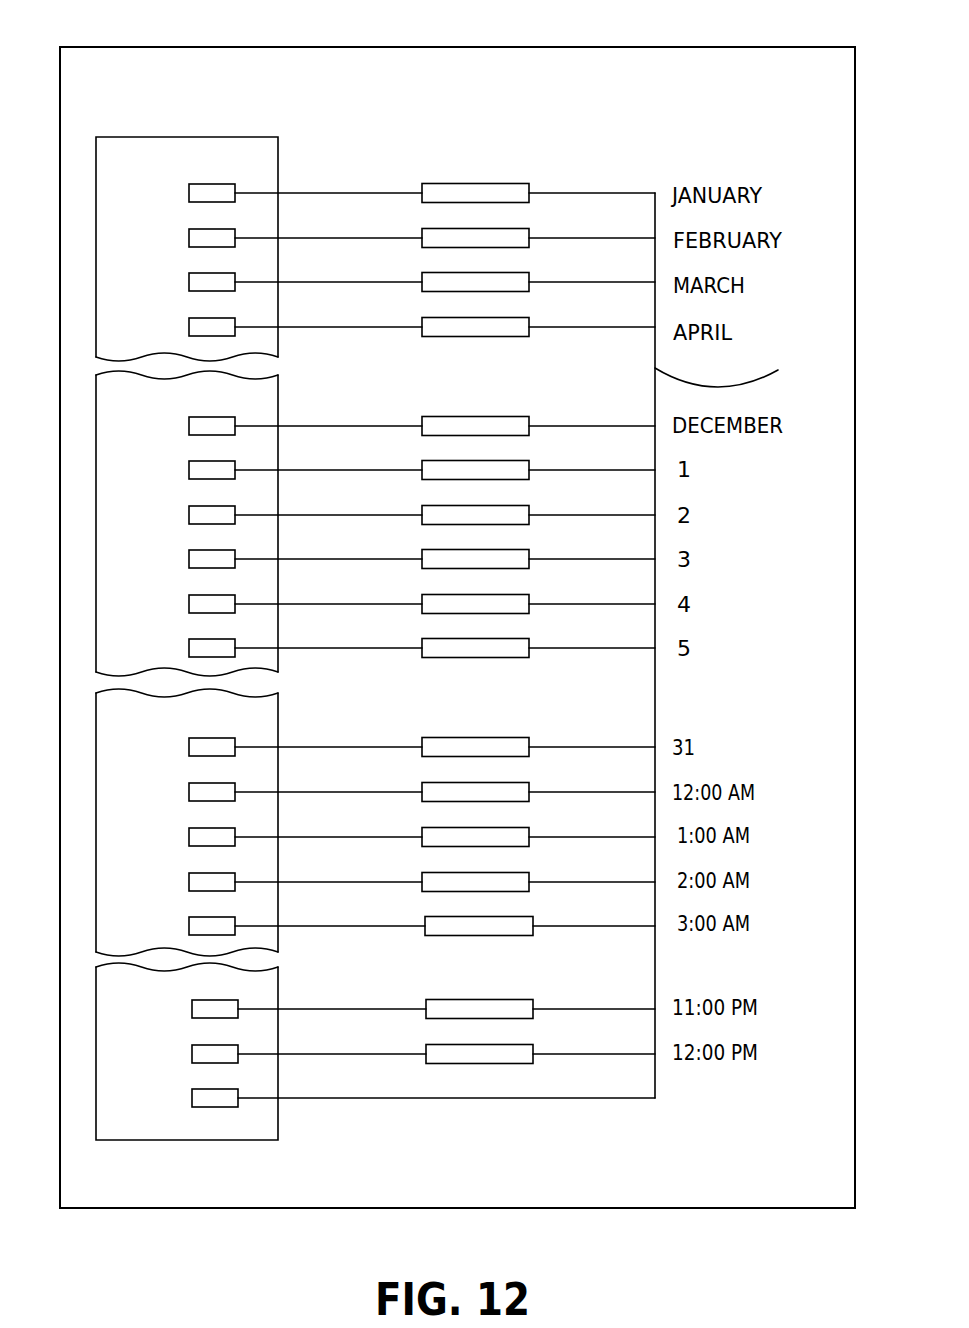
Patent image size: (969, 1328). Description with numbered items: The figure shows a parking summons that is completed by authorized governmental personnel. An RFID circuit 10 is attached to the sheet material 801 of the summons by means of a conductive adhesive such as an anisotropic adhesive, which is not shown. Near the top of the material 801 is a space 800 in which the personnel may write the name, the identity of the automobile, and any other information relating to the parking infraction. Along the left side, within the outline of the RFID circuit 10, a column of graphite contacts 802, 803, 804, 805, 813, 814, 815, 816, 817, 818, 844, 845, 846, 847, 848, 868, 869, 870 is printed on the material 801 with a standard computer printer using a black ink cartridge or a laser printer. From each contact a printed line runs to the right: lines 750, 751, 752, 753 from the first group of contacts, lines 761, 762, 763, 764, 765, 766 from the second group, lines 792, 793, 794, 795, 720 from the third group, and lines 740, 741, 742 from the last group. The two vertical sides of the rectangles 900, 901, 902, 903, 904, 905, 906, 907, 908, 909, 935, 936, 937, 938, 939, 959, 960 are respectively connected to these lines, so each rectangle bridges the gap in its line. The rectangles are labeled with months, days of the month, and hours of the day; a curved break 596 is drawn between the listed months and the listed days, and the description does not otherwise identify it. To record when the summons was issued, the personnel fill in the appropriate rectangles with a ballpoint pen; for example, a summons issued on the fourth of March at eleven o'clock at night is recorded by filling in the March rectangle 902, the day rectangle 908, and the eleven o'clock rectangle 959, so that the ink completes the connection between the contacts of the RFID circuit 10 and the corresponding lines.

The RFID circuit 10 is at (217, 148).
The material 801 is at (625, 65).
The space 800 is at (556, 82).
The break indicating omitted entries 596 is at (738, 364).
The graphite contact 802 is at (189, 184).
The graphite contact 803 is at (189, 229).
The graphite contact 804 is at (189, 273).
The graphite contact 805 is at (189, 318).
The graphite contact 813 is at (189, 417).
The graphite contact 814 is at (189, 461).
The graphite contact 815 is at (189, 506).
The graphite contact 816 is at (189, 550).
The graphite contact 817 is at (189, 595).
The graphite contact 818 is at (189, 639).
The graphite contact 844 is at (189, 738).
The graphite contact 845 is at (189, 783).
The graphite contact 846 is at (189, 828).
The graphite contact 847 is at (189, 873).
The graphite contact 848 is at (189, 917).
The graphite contact 868 is at (192, 1000).
The graphite contact 869 is at (192, 1045).
The graphite contact 870 is at (192, 1089).
The line 750 is at (370, 193).
The line 751 is at (370, 238).
The line 752 is at (370, 282).
The line 753 is at (370, 327).
The line 761 is at (377, 426).
The line 762 is at (377, 470).
The line 763 is at (377, 515).
The line 764 is at (377, 559).
The line 765 is at (377, 604).
The line 766 is at (377, 648).
The line 792 is at (377, 747).
The line 793 is at (377, 792).
The line 794 is at (377, 837).
The line 795 is at (377, 882).
The line 720 is at (387, 926).
The line 740 is at (378, 1009).
The line 741 is at (378, 1054).
The line 742 is at (378, 1098).
The rectangle 900 is at (529, 184).
The rectangle 901 is at (529, 229).
The rectangle 902 is at (529, 273).
The rectangle 903 is at (529, 318).
The rectangle 904 is at (529, 417).
The rectangle 905 is at (529, 461).
The rectangle 906 is at (529, 506).
The rectangle 907 is at (529, 550).
The rectangle 908 is at (529, 595).
The rectangle 909 is at (529, 639).
The rectangle 935 is at (529, 738).
The rectangle 936 is at (529, 783).
The rectangle 937 is at (529, 828).
The rectangle 938 is at (529, 873).
The rectangle 939 is at (531, 917).
The rectangle 959 is at (533, 1000).
The rectangle 960 is at (533, 1045).